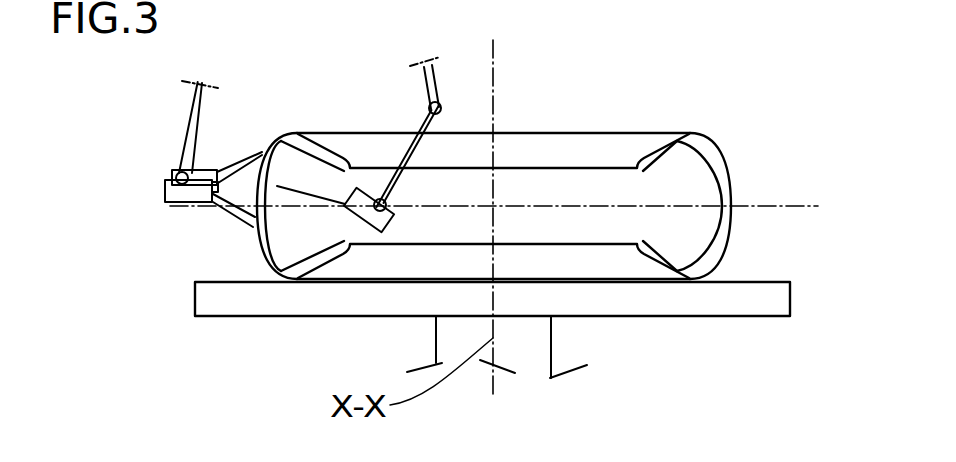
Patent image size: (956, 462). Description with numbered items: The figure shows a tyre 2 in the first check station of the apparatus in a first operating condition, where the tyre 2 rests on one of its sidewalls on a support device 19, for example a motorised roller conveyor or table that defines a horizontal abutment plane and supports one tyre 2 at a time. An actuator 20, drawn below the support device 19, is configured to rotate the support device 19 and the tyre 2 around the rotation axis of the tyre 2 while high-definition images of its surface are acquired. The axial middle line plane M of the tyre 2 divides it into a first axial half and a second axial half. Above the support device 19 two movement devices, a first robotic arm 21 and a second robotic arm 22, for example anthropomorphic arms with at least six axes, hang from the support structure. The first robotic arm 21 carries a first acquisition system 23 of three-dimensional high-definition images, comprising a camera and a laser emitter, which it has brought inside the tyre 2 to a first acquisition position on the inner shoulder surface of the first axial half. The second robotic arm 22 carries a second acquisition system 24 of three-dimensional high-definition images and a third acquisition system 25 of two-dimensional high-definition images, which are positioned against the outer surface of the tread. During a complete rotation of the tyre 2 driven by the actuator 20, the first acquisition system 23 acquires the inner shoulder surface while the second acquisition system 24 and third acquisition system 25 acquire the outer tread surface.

The tyre 2 is at (706, 123).
The support device 19 is at (768, 295).
The actuator 20 is at (523, 350).
The first robotic arm 21 is at (437, 85).
The second robotic arm 22 is at (195, 105).
The first acquisition system of three-dimensional high-definition images 23 is at (367, 197).
The second acquisition system of three-dimensional high-definition images 24 is at (210, 172).
The third acquisition system of two-dimensional high-definition images 25 is at (193, 190).
The axial middle line plane M is at (765, 206).